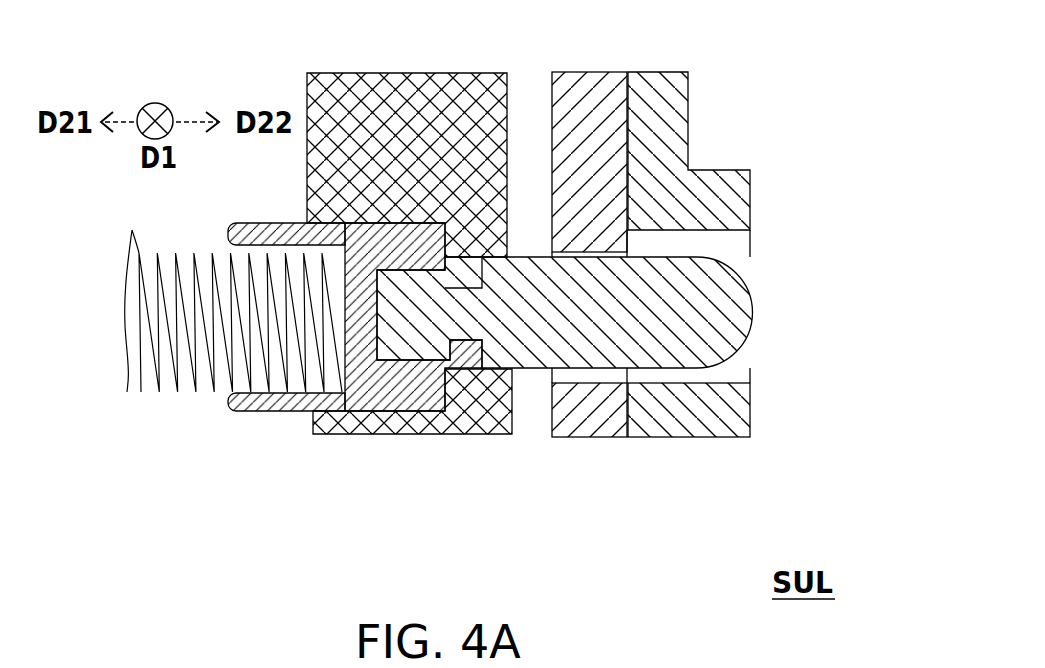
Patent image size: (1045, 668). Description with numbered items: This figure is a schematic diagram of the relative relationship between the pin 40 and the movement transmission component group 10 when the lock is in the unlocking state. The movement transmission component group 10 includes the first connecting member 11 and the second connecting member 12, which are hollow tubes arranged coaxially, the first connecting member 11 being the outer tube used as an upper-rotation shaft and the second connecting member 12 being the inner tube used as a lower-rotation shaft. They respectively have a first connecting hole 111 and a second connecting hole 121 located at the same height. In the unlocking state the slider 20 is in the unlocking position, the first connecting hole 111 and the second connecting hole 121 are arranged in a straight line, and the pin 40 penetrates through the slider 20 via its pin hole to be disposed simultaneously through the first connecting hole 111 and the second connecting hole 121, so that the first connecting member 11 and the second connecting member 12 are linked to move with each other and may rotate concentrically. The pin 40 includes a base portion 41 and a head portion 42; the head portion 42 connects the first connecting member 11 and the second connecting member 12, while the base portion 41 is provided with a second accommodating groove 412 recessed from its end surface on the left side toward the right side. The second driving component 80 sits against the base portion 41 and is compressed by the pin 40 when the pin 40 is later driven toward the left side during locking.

The movement transmission component group 10 is at (643, 309).
The first connecting member 11 is at (592, 437).
The second connecting member 12 is at (689, 465).
The first connecting hole 111 is at (585, 252).
The second connecting hole 121 is at (663, 242).
The slider 20 is at (405, 102).
The pin 40 is at (391, 393).
The base portion 41 is at (367, 386).
The second accommodating groove 412 is at (273, 393).
The head portion 42 is at (365, 507).
The second driving component 80 is at (190, 378).